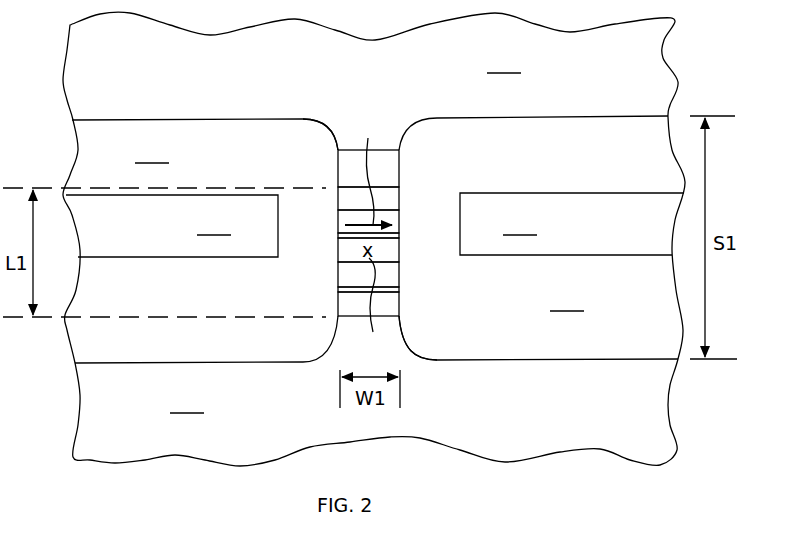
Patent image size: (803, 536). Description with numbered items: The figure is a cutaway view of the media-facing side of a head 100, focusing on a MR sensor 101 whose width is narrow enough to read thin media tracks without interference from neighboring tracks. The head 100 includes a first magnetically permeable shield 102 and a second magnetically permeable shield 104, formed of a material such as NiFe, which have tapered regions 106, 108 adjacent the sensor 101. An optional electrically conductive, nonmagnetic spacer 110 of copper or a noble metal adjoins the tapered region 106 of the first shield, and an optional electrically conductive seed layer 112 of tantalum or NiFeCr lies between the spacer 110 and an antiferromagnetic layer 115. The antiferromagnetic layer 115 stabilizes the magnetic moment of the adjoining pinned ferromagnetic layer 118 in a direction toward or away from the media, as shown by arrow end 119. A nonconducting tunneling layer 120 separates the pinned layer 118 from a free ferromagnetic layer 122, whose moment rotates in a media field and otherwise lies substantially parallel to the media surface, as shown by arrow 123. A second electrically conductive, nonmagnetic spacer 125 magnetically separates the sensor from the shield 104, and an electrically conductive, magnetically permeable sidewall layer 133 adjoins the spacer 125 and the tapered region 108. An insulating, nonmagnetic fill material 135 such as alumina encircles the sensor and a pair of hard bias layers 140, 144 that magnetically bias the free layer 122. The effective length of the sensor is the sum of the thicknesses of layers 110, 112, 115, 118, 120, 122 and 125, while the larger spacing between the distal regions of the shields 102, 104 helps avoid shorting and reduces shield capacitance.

The head 100 is at (688, 405).
The MR sensor 101 is at (446, 180).
The first magnetically permeable shield 102 is at (188, 403).
The second magnetically permeable shield 104 is at (505, 63).
The tapered region of first shield 106 is at (411, 345).
The tapered region of second shield 108 is at (336, 135).
The electrically conductive, nonmagnetic spacer 110 is at (346, 300).
The electrically conductive seed layer 112 is at (397, 290).
The antiferromagnetic layer 115 is at (346, 276).
The pinned ferromagnetic layer 118 is at (400, 258).
The arrow end 119 is at (373, 309).
The tunneling layer 120 is at (352, 237).
The free ferromagnetic layer 122 is at (400, 223).
The arrow 123 is at (370, 171).
The second electrically conductive, nonmagnetic spacer 125 is at (352, 202).
The electrically conductive sidewall layer 133 is at (346, 172).
The fill material 135 is at (375, 239).
The hard bias layer 140 is at (172, 226).
The hard bias layer 144 is at (572, 224).